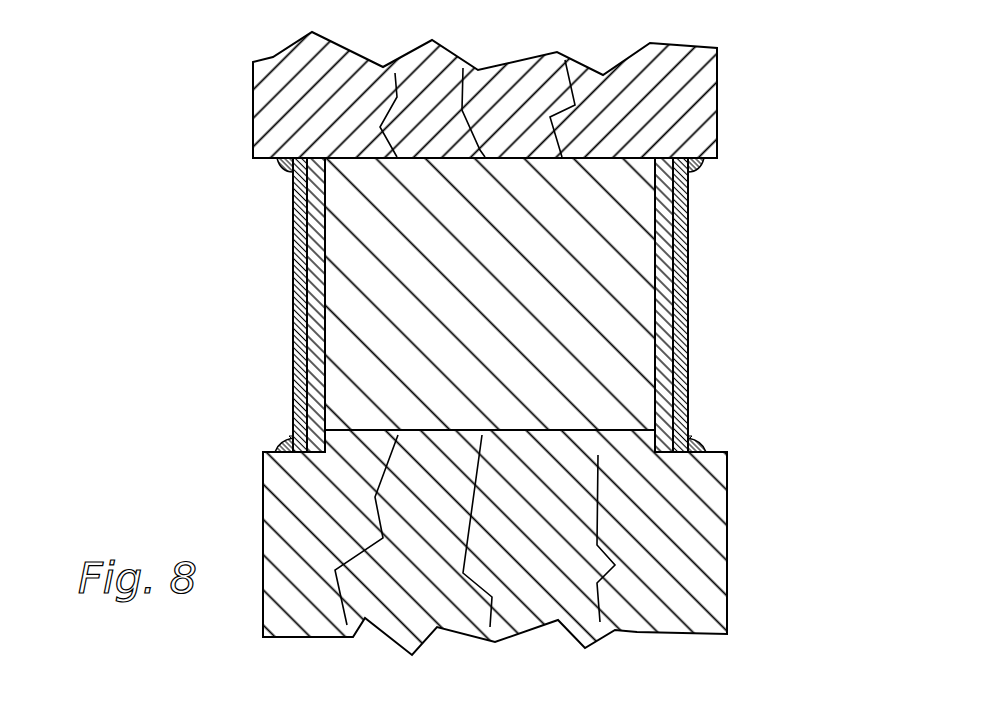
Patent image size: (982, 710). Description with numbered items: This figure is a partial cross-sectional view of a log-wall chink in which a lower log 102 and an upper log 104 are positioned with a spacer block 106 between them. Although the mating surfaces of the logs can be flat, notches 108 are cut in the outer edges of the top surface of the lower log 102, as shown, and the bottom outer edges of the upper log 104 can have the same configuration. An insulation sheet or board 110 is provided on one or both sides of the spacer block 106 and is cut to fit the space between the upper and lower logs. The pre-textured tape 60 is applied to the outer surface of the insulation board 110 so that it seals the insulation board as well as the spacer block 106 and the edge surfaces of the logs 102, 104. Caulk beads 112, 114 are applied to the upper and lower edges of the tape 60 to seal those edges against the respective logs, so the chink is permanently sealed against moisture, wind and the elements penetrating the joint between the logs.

The lower log 102 is at (707, 520).
The upper log 104 is at (703, 80).
The spacer block 106 is at (618, 291).
The notches 108 is at (276, 450).
The insulation board 110 is at (293, 280).
The caulk bead 112 is at (287, 168).
The caulk bead 114 is at (287, 440).
The pre-textured tape 60 is at (293, 218).